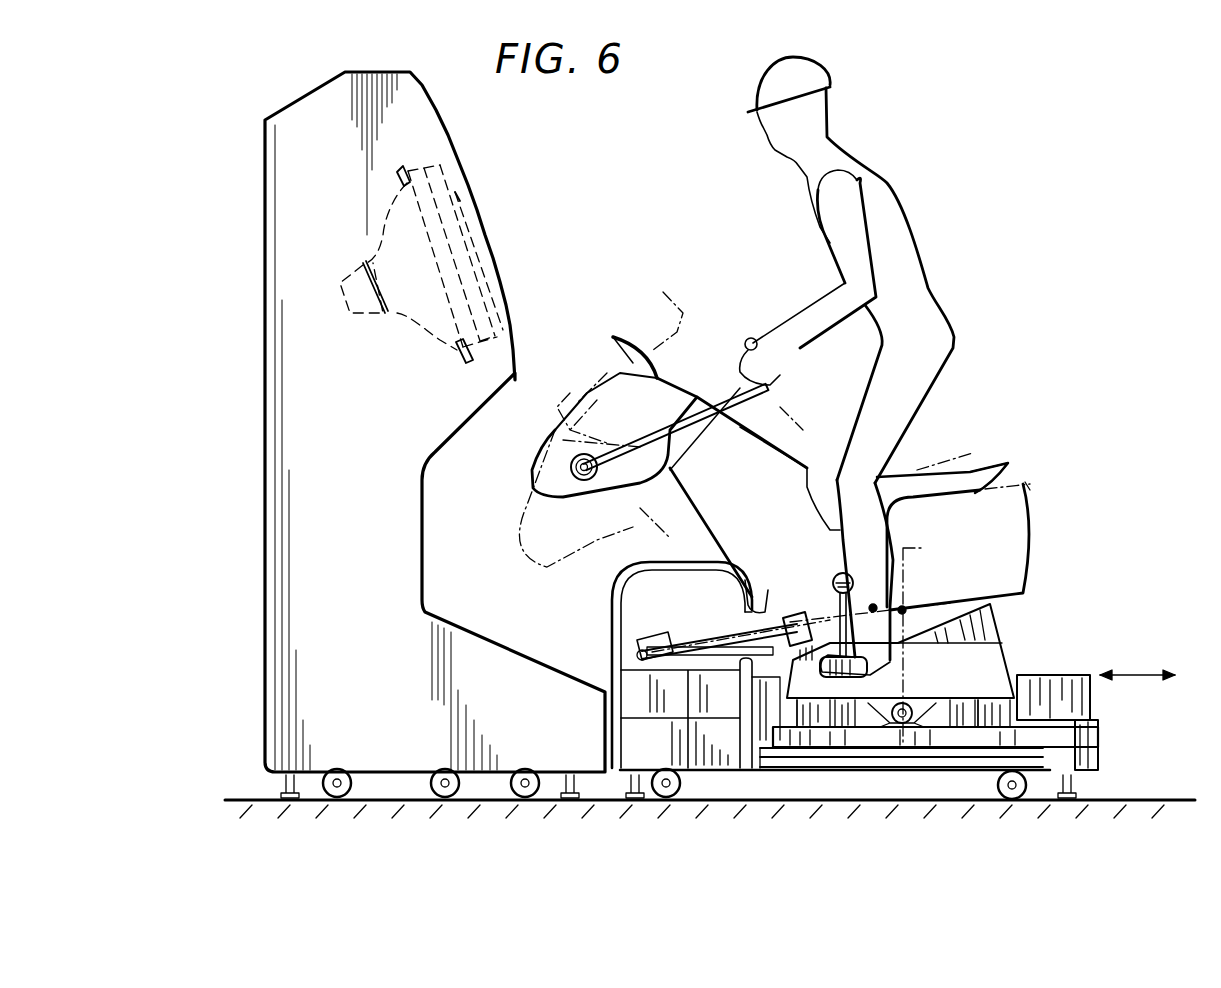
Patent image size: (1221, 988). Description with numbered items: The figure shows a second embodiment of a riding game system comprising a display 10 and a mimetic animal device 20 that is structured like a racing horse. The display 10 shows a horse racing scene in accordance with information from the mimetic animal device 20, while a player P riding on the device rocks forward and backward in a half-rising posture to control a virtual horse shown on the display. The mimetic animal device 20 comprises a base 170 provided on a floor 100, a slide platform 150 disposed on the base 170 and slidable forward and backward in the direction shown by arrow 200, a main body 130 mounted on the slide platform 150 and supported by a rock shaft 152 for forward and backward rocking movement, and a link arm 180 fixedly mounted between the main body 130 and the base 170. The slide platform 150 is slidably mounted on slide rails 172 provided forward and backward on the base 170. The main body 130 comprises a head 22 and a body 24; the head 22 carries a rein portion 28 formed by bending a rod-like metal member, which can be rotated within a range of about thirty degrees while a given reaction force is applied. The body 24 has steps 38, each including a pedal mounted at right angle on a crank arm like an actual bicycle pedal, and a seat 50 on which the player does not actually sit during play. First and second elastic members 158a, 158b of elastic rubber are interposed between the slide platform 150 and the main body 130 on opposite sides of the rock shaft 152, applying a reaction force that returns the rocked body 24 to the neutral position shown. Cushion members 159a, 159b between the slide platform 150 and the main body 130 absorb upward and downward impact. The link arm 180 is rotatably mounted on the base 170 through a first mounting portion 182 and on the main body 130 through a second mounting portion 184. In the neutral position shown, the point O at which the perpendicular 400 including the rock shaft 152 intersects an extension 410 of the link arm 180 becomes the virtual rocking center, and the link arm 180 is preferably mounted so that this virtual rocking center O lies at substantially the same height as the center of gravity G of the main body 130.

The display 10 is at (458, 200).
The mimetic animal device 20 is at (917, 138).
The player P is at (900, 210).
The head 22 is at (597, 370).
The rein portion 28 is at (710, 403).
The seat 50 is at (915, 477).
The body 24 is at (982, 492).
The main body 130 is at (896, 640).
The steps 38 is at (893, 673).
The rock shaft 152 is at (898, 718).
The slide platform 150 is at (1033, 740).
The slide rails 172 is at (1100, 745).
The cushion member 159b is at (987, 713).
The cushion member 159a is at (797, 767).
The first elastic member 158a is at (847, 727).
The second elastic member 158b is at (953, 720).
The perpendicular 400 is at (882, 639).
The center of gravity G is at (873, 606).
The virtual rocking center O is at (904, 608).
The extension of the link arm 410 is at (812, 583).
The link arm 180 is at (632, 701).
The base 170 is at (640, 685).
The first mounting portion 182 is at (729, 622).
The second mounting portion 184 is at (820, 622).
The arrow 200 is at (1137, 662).
The floor 100 is at (1160, 788).